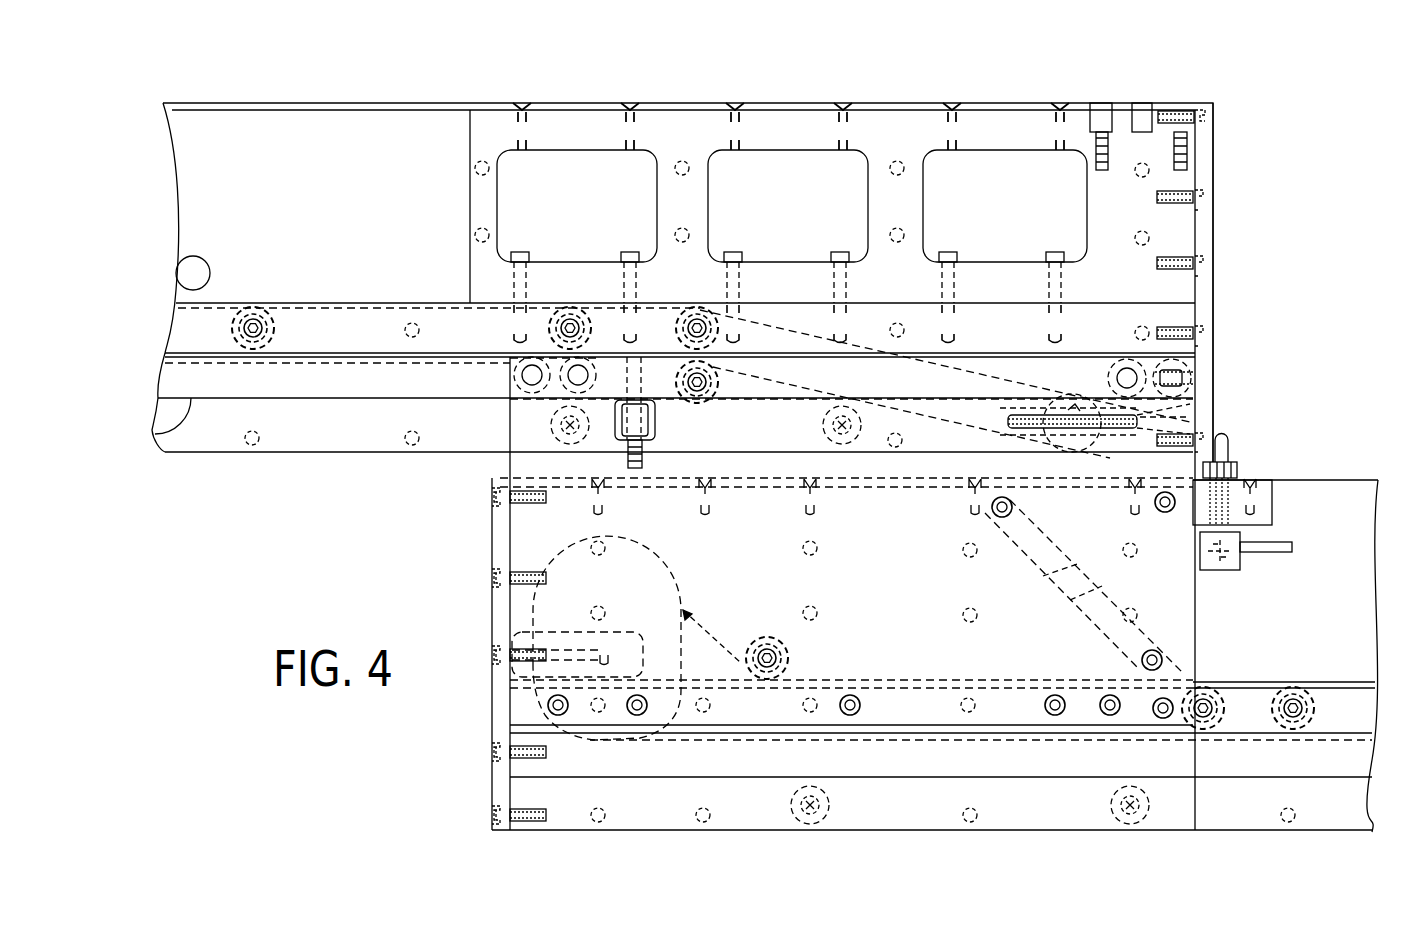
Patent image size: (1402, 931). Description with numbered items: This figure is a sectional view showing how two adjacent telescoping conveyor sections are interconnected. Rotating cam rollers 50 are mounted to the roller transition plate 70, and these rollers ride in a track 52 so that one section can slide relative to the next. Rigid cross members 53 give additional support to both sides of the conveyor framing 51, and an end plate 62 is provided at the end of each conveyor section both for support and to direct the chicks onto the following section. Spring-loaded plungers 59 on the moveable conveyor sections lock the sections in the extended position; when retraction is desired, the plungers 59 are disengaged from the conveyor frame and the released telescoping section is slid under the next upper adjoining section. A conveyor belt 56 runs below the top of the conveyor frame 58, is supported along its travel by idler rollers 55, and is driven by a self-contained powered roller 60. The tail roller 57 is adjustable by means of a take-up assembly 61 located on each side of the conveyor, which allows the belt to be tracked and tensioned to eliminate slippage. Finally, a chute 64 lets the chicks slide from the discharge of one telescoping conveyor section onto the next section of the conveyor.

The rotating cam rollers 50 is at (525, 380).
The conveyor framing 51 is at (235, 455).
The track 52 is at (158, 428).
The rigid cross members 53 is at (556, 430).
The idler rollers 55 is at (270, 308).
The conveyor belt 56 is at (344, 303).
The tail roller 57 is at (1088, 450).
The conveyor frame 58 is at (367, 103).
The spring-loaded plungers 59 is at (1230, 462).
The self-contained powered roller 60 is at (492, 708).
The take-up assembly 61 is at (1193, 403).
The end plate 62 is at (1203, 300).
The chute 64 is at (1047, 578).
The roller transition plate 70 is at (785, 362).